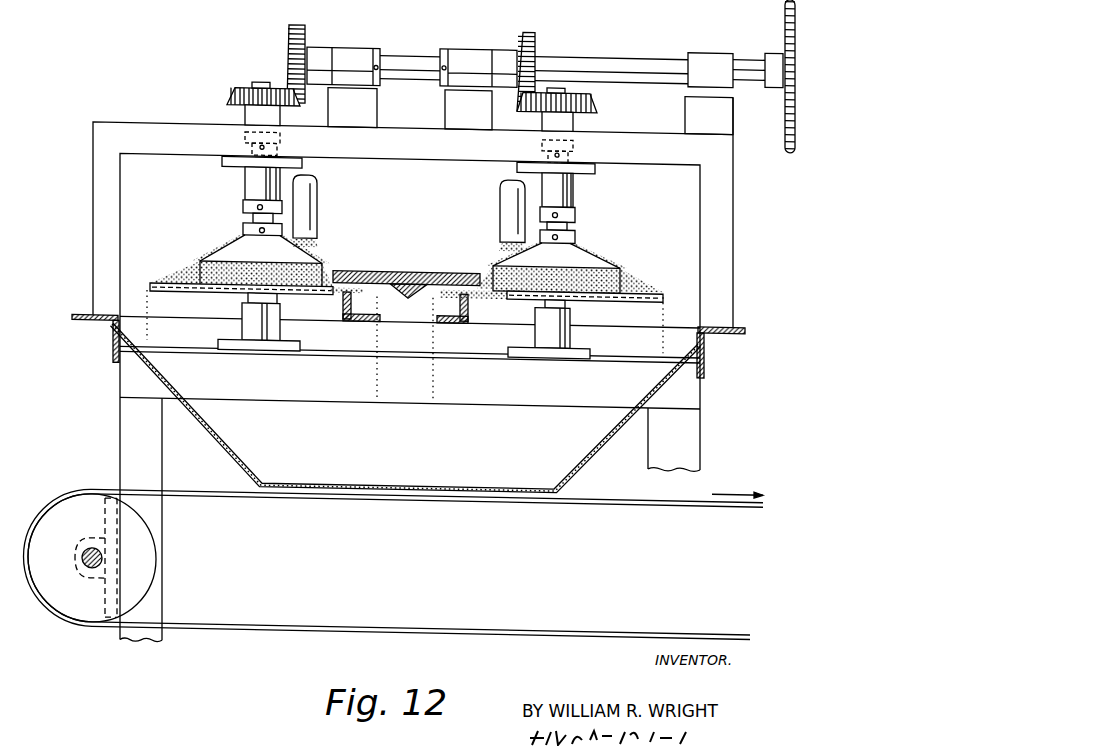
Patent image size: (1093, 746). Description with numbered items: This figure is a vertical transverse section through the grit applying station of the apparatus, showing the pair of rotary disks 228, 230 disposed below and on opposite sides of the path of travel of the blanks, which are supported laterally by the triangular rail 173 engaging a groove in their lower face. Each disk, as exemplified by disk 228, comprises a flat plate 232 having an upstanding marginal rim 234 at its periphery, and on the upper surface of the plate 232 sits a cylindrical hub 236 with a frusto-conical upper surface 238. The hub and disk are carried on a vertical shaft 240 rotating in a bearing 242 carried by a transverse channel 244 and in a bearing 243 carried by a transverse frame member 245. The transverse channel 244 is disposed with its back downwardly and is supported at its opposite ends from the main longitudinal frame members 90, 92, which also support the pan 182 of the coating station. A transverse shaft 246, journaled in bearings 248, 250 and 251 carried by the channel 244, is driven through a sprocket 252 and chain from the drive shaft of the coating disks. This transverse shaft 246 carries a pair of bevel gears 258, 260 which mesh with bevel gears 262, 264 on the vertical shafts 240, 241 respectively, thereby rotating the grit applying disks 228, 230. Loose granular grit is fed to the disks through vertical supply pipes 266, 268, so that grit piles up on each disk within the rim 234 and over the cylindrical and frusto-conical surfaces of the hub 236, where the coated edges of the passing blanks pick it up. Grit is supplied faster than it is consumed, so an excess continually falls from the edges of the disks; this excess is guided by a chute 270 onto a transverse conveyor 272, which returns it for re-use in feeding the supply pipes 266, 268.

The pan 182 is at (202, 4).
The bevel gear 260 is at (297, 41).
The bevel gear 264 is at (235, 91).
The transverse channel 244 is at (170, 137).
The bearing 251 is at (353, 56).
The bearing 250 is at (467, 61).
The bevel gear 258 is at (533, 44).
The transverse shaft 246 is at (635, 45).
The bearing 248 is at (710, 47).
The sprocket 252 is at (787, 11).
The bevel gear 262 is at (593, 103).
The vertical supply pipe 268 is at (320, 210).
The vertical supply pipe 266 is at (503, 211).
The vertical shaft 241 is at (250, 221).
The bearing 242 is at (573, 193).
The frusto-conical upper surface 238 is at (577, 246).
The cylindrical hub 236 is at (618, 266).
The marginal rim 234 is at (647, 285).
The rotary disk 230 is at (218, 307).
The rotary disk 228 is at (643, 309).
The flat plate 232 is at (473, 300).
The triangular rail 173 is at (408, 298).
The shaft 240 is at (538, 318).
The bearing 243 is at (573, 333).
The transverse frame member 245 is at (493, 391).
The main longitudinal frame member 92 is at (88, 329).
The main longitudinal frame member 90 is at (727, 327).
The chute 270 is at (587, 456).
The transverse conveyor 272 is at (193, 496).